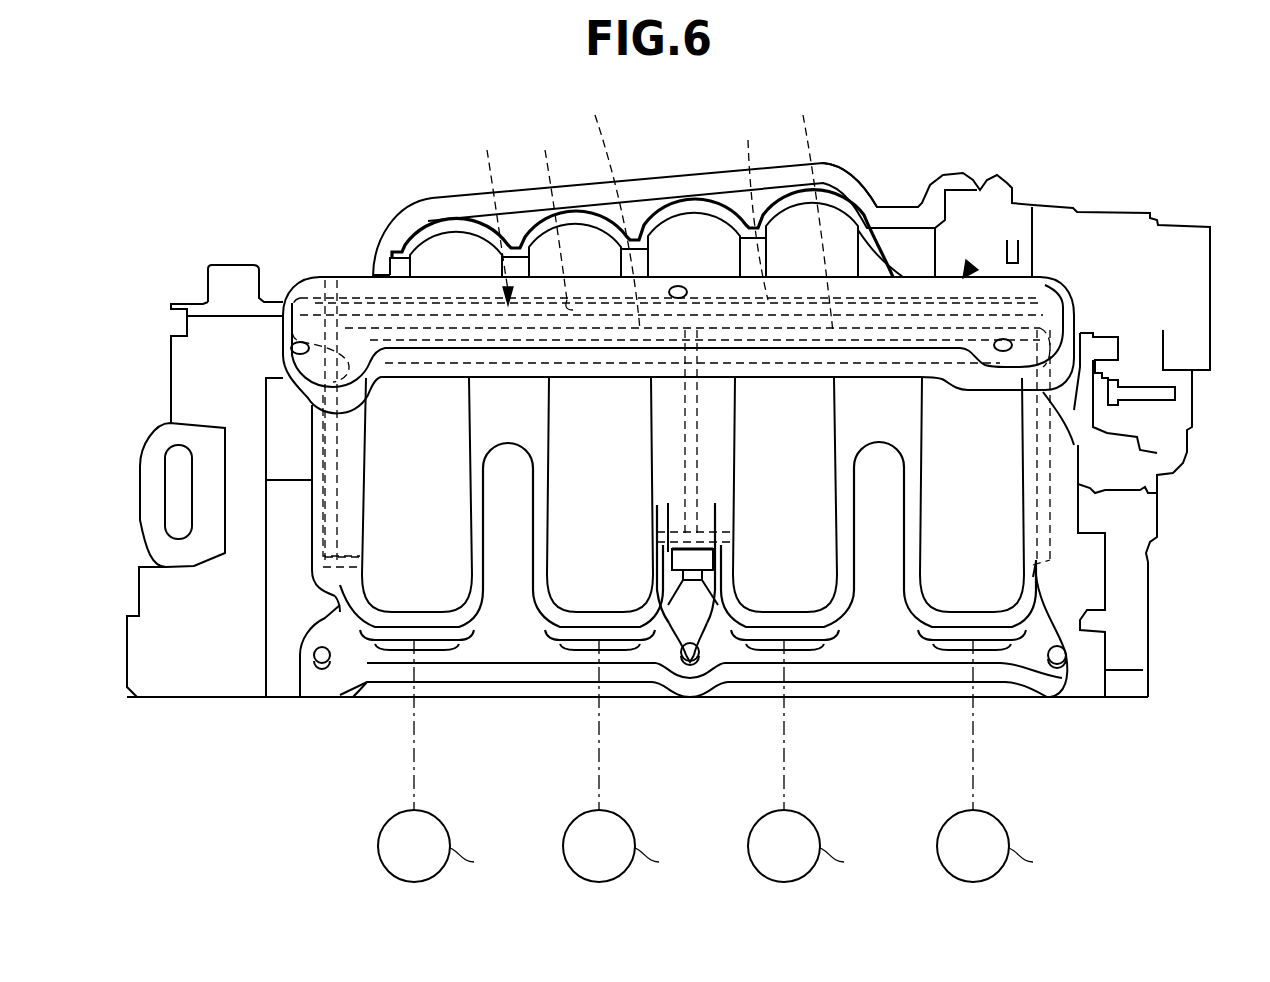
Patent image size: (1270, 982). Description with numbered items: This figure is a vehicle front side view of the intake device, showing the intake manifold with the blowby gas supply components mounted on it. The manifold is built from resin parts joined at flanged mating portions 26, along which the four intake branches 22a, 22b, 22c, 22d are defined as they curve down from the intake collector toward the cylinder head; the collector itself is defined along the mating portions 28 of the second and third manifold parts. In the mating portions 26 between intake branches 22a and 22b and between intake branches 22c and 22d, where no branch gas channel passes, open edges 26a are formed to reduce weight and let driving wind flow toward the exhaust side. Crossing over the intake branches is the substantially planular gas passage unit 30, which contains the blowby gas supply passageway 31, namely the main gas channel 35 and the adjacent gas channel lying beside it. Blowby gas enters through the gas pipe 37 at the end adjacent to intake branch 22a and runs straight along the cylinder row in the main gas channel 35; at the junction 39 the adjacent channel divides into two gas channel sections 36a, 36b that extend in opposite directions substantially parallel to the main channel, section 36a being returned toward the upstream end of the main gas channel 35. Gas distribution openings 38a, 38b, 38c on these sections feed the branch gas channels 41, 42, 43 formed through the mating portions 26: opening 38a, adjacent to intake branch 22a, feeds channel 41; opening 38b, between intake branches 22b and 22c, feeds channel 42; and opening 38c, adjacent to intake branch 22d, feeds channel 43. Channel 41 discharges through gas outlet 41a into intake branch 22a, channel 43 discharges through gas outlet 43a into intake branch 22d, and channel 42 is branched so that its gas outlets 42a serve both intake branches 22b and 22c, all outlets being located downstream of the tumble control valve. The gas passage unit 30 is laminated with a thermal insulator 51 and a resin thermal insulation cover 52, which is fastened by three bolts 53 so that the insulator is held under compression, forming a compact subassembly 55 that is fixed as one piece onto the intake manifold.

The flanged mating portions 26 is at (667, 415).
The open edges 26a is at (486, 570).
The intake branch 22a is at (422, 587).
The intake branch 22b is at (578, 593).
The intake branch 22c is at (773, 590).
The intake branch 22d is at (958, 593).
The mating portions 28 is at (723, 480).
The blowby gas supply passageway 31 is at (489, 212).
The main gas channel 35 is at (549, 215).
The gas channel section 36a is at (615, 208).
The gas channel section 36b is at (830, 209).
The gas pipe 37 is at (333, 287).
The gas distribution opening 38a is at (288, 358).
The gas distribution opening 38b is at (700, 342).
The gas distribution opening 38c is at (1040, 322).
The junction 39 is at (755, 204).
The branch gas channel 41 is at (337, 493).
The branch gas channel 42 is at (685, 460).
The branch gas channel 43 is at (1040, 475).
The gas outlet 41a is at (342, 700).
The gas outlets 42a is at (683, 700).
The gas outlet 43a is at (1033, 577).
The bolts 53 is at (292, 347).
The subassembly 55 is at (1040, 201).
The gas passage unit 30 is at (1040, 201).
The thermal insulator 51 is at (1040, 201).
The thermal insulation cover 52 is at (967, 272).